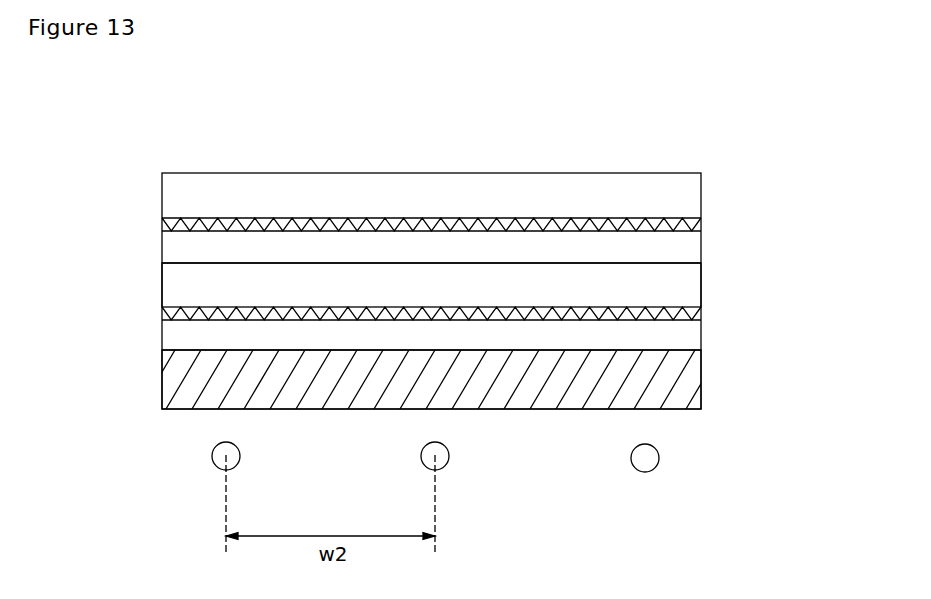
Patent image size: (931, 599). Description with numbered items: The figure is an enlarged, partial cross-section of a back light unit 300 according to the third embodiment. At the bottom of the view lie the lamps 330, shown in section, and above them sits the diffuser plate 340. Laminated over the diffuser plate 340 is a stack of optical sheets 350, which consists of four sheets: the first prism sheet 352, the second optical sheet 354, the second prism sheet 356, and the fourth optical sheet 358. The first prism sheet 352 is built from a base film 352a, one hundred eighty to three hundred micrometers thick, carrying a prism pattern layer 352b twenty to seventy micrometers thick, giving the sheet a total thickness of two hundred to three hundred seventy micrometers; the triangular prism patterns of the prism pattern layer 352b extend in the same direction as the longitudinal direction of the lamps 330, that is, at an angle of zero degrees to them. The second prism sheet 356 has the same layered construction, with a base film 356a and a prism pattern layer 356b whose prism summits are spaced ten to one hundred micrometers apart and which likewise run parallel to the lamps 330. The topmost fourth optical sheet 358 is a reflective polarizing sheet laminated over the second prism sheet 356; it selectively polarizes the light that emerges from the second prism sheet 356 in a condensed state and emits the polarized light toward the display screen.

The back light unit 300 is at (611, 123).
The lamps 330 is at (659, 459).
The diffuser plate 340 is at (697, 379).
The optical sheets 350 is at (768, 180).
The first prism sheet 352 is at (697, 335).
The base film 352a is at (164, 337).
The prism pattern layer 352b is at (164, 306).
The second optical sheet 354 is at (697, 280).
The second prism sheet 356 is at (697, 250).
The base film 356a is at (164, 247).
The prism pattern layer 356b is at (164, 218).
The reflective polarizing sheet 358 is at (697, 190).